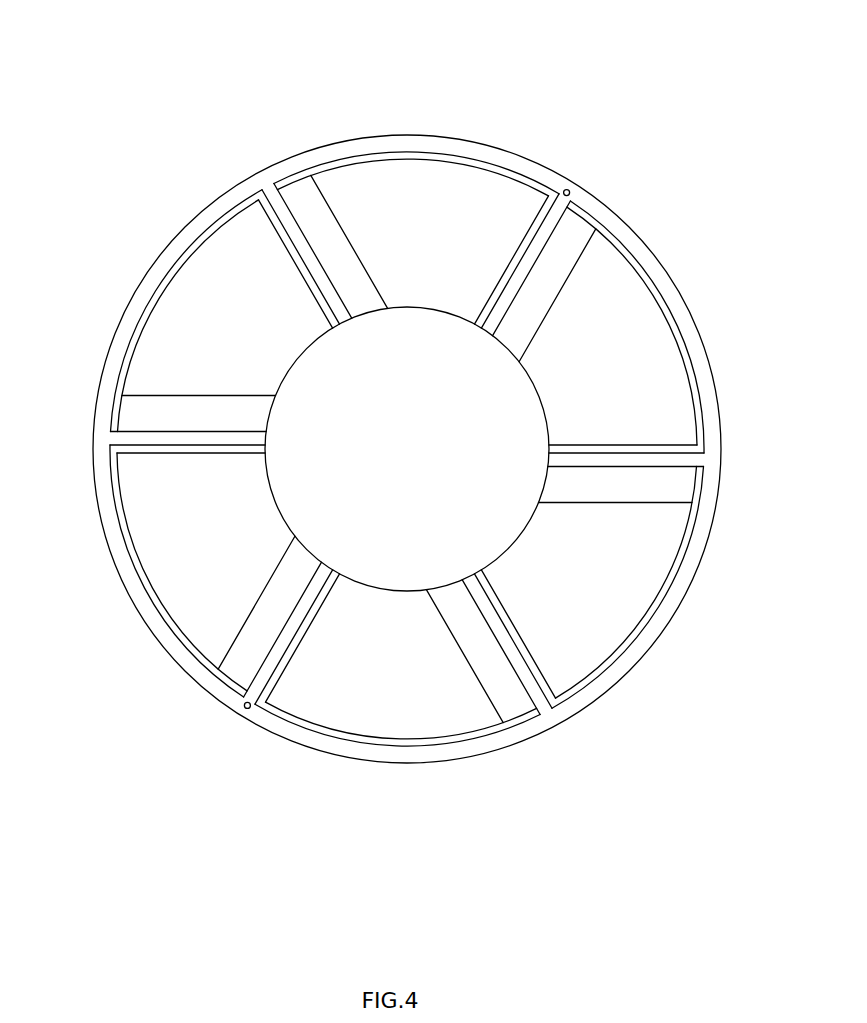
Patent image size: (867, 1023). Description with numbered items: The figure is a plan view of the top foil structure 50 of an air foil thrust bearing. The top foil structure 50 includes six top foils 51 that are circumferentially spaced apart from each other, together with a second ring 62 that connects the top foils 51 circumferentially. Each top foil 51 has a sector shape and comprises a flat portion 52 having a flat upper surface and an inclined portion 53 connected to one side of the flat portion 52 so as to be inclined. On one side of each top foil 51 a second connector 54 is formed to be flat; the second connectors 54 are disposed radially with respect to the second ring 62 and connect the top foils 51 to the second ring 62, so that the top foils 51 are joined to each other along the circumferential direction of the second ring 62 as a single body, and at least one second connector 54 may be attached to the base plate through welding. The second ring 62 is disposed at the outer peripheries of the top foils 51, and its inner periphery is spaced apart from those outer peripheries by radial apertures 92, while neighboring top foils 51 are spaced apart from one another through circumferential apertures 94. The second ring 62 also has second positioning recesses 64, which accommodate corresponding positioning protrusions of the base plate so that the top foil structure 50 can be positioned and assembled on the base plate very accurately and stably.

The top foil structure 50 is at (75, 93).
The top foil 51 is at (452, 152).
The flat portion 52 is at (648, 282).
The inclined portion 53 is at (576, 205).
The second connector 54 is at (590, 222).
The second ring 62 is at (720, 386).
The second positioning recess 64 is at (570, 190).
The radial aperture 92 is at (405, 151).
The circumferential aperture 94 is at (564, 185).